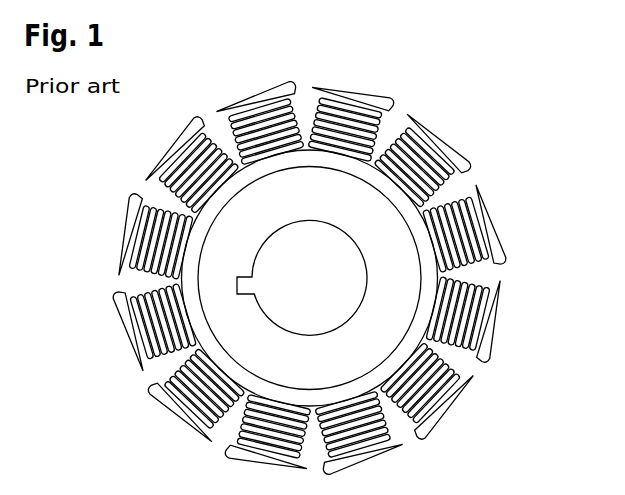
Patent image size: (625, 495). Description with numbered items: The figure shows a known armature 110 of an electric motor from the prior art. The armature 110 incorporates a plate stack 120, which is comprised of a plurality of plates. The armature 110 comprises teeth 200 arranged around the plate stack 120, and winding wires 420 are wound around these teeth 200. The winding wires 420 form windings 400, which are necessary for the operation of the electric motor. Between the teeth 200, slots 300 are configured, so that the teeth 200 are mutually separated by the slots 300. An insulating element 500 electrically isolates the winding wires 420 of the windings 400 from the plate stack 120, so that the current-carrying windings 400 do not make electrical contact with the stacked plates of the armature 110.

The armature 110 is at (471, 117).
The plate stack 120 is at (487, 318).
The teeth 200 is at (493, 240).
The slots 300 is at (462, 362).
The windings 400 is at (471, 227).
The winding wires 420 is at (467, 190).
The insulating element 500 is at (400, 362).